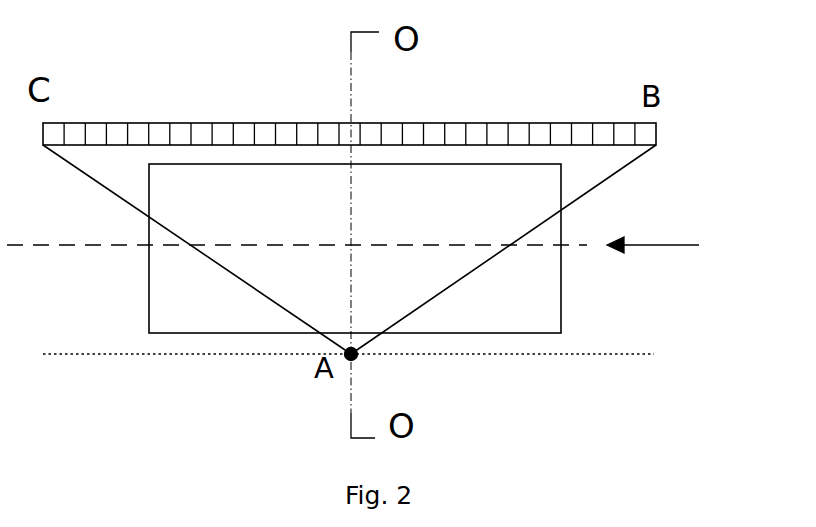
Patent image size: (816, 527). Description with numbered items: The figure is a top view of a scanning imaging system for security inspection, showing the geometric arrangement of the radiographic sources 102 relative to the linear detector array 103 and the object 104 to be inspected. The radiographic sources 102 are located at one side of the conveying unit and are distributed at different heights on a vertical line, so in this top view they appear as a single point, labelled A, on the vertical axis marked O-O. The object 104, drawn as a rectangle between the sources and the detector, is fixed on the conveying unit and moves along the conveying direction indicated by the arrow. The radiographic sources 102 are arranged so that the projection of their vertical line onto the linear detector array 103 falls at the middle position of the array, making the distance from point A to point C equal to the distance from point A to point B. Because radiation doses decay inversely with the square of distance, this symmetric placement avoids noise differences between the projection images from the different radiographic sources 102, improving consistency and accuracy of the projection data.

The radiographic sources 102 is at (355, 348).
The linear detector array 103 is at (657, 123).
The object to be inspected 104 is at (562, 333).